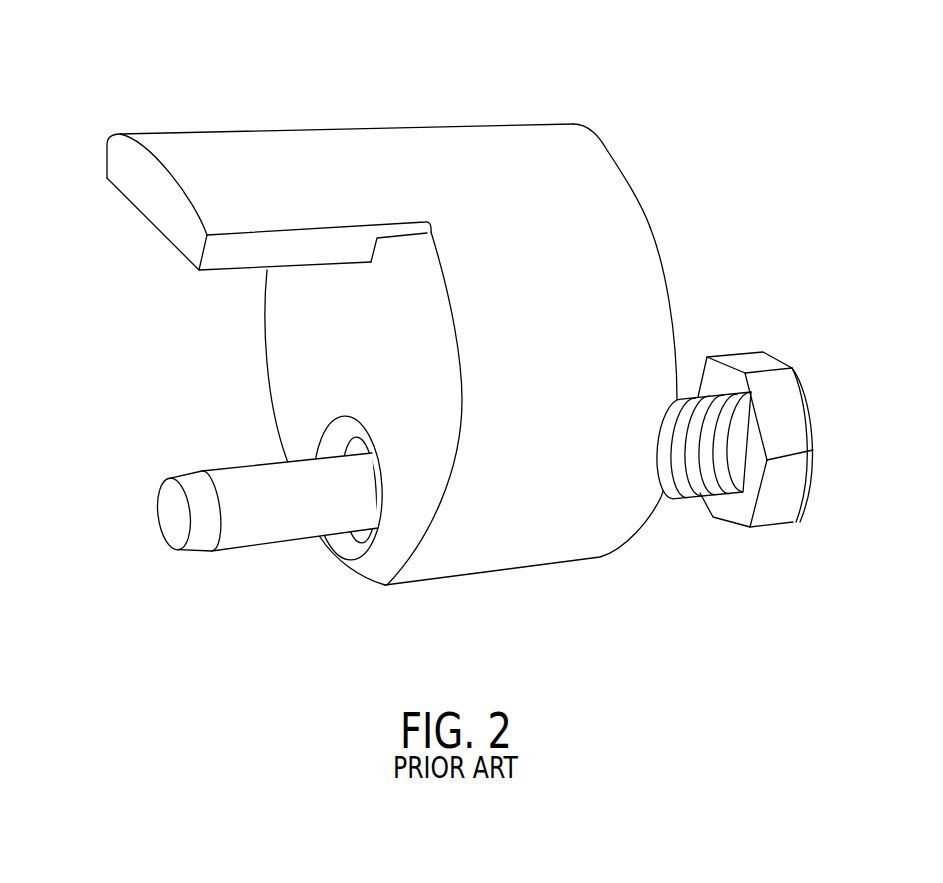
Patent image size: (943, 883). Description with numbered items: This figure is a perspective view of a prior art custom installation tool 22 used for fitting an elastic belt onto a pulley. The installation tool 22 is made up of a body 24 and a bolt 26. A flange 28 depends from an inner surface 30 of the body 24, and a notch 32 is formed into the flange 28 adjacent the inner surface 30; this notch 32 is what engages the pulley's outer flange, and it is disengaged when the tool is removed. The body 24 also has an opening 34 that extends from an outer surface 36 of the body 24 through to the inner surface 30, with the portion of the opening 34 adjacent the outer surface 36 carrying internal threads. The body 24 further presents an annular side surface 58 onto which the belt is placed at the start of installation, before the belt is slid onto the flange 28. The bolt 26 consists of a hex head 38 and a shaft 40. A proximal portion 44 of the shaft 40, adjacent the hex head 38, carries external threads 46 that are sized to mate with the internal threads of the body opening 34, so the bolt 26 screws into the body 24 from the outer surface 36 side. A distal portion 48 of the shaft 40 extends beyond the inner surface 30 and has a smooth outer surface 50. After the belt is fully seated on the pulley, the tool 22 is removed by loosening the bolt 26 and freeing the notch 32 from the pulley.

The installation tool 22 is at (104, 84).
The body 24 is at (540, 94).
The bolt 26 is at (762, 322).
The flange 28 is at (240, 150).
The inner surface 30 is at (287, 362).
The notch 32 is at (397, 238).
The opening 34 is at (350, 548).
The outer surface 36 is at (655, 232).
The hex head 38 is at (783, 525).
The shaft 40 is at (140, 545).
The proximal portion 44 is at (690, 528).
The external threads 46 is at (683, 397).
The distal portion 48 is at (211, 443).
The smooth outer surface 50 is at (283, 543).
The annular side surface 58 is at (608, 175).